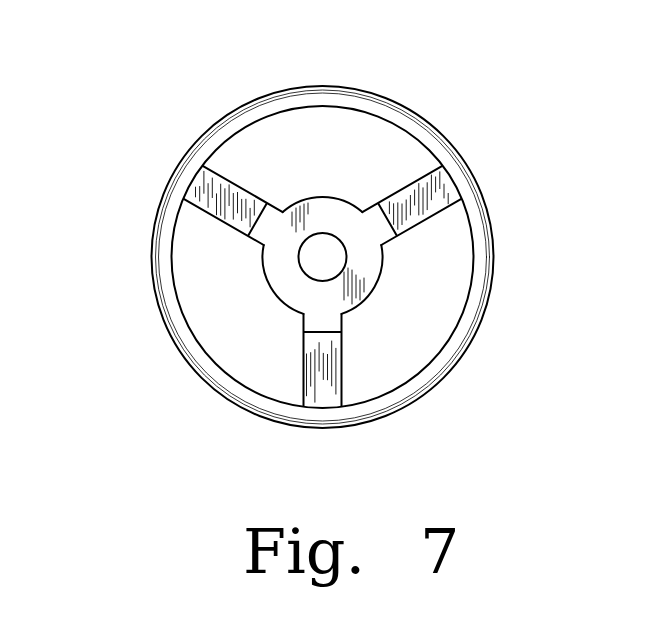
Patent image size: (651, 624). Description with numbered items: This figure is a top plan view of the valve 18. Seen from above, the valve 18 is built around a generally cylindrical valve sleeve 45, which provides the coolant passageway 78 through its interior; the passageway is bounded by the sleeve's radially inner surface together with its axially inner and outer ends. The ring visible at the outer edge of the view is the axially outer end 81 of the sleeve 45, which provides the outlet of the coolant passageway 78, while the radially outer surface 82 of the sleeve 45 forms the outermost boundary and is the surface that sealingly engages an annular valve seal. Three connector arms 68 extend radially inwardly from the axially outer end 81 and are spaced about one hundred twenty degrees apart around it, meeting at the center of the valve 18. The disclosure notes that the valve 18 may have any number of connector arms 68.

The valve 18 is at (158, 110).
The valve sleeve 45 is at (516, 231).
The connector arms 68 is at (383, 190).
The coolant passageway 78 is at (438, 328).
The axially outer end 81 is at (312, 94).
The radially outer surface 82 is at (430, 121).